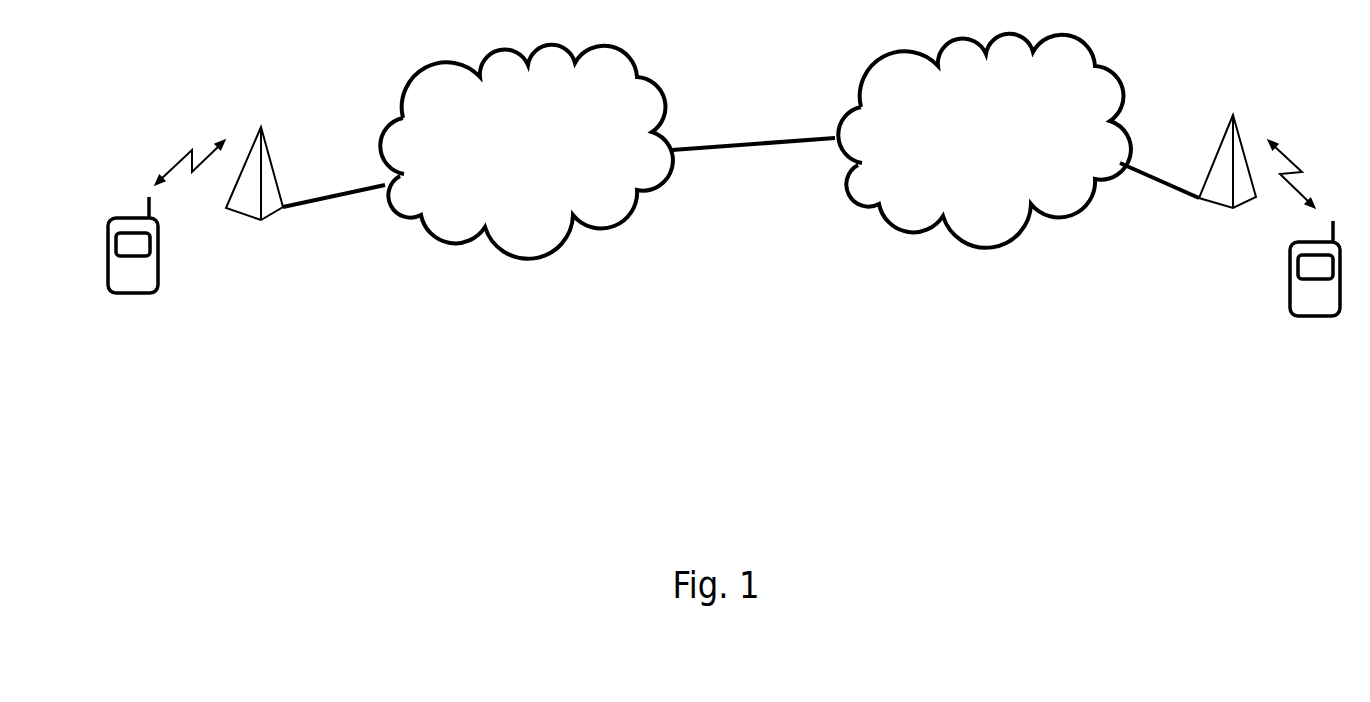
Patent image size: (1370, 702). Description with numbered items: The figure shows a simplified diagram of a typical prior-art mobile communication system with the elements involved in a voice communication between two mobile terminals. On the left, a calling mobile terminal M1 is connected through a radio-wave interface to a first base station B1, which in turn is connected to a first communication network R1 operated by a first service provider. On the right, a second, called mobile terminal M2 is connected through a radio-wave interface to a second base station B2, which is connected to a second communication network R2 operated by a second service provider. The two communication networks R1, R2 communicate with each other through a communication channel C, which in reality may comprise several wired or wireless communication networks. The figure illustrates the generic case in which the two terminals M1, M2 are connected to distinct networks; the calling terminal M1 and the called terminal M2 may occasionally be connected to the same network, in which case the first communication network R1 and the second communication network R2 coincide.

The calling mobile terminal M1 is at (166, 239).
The first base station B1 is at (245, 197).
The first communication network R1 is at (526, 152).
The communication channel C is at (753, 127).
The second communication network R2 is at (984, 141).
The second base station B2 is at (1222, 187).
The called mobile terminal M2 is at (1304, 250).